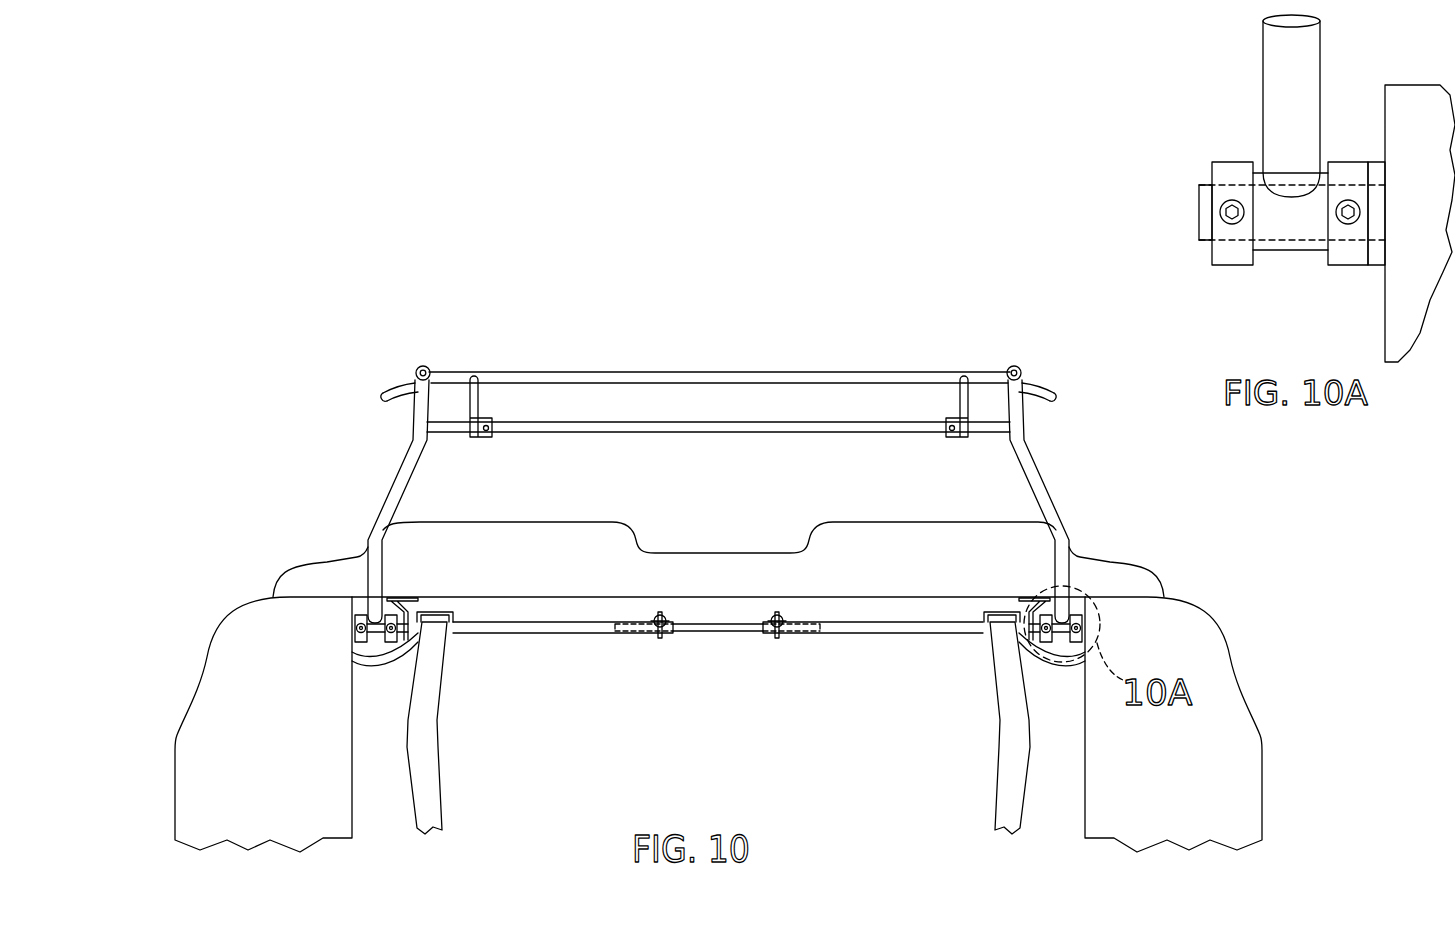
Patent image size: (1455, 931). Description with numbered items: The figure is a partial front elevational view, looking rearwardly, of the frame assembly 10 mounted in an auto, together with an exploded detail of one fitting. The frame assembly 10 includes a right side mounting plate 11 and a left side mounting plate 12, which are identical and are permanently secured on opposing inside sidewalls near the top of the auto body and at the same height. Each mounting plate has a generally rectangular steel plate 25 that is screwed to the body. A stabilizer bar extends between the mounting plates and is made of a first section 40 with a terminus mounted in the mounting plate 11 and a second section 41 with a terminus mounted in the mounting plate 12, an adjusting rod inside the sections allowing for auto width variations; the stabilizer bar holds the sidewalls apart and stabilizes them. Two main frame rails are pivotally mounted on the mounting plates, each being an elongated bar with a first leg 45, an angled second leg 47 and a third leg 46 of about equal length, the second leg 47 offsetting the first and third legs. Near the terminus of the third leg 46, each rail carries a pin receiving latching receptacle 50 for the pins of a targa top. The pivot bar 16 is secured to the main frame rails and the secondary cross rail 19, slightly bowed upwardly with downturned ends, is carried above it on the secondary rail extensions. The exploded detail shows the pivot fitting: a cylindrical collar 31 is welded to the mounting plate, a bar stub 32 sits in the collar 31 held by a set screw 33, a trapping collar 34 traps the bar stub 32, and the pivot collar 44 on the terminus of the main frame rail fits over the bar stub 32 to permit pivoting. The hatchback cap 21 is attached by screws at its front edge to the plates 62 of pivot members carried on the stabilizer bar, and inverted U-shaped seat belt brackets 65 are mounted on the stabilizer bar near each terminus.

In FIG. 10, the frame assembly 10 is at (497, 331).
In FIG. 10, the mounting plate 11 is at (330, 637).
In FIG. 10, the mounting plate 12 is at (1105, 640).
In FIG. 10, the pivot bar 16 is at (778, 435).
In FIG. 10, the secondary cross rail 19 is at (755, 372).
In FIG. 10, the hatchback cap 21 is at (545, 525).
In FIG. 10A, the steel plate 25 is at (1373, 266).
In FIG. 10A, the collar 31 is at (1340, 160).
In FIG. 10A, the bar stub 32 is at (1199, 215).
In FIG. 10A, the set screw 33 is at (1360, 208).
In FIG. 10A, the trapping collar 34 is at (1240, 160).
In FIG. 10, the first section 40 is at (573, 635).
In FIG. 10, the second section 41 is at (852, 635).
In FIG. 10A, the pivot collar 44 is at (1285, 252).
In FIG. 10, the first leg 45 is at (360, 557).
In FIG. 10A, the first leg 45 is at (1262, 47).
In FIG. 10, the third leg 46 is at (410, 405).
In FIG. 10, the second leg 47 is at (396, 478).
In FIG. 10, the pin receiving latching receptacle 50 is at (412, 372).
In FIG. 10, the plate 62 is at (412, 597).
In FIG. 10, the seat belt bracket 65 is at (445, 608).